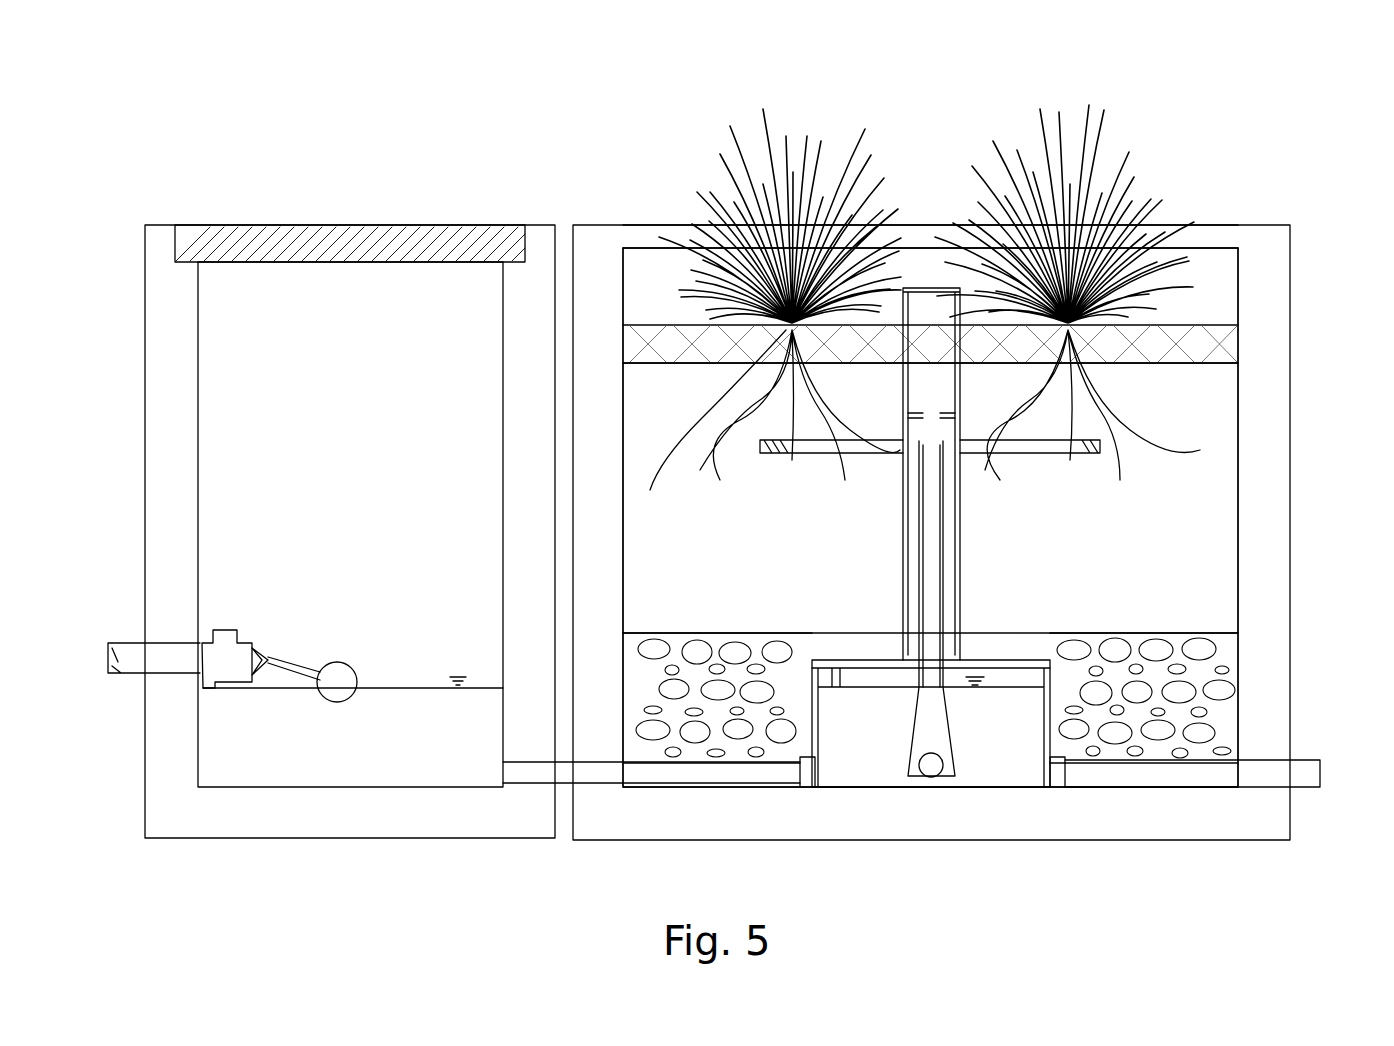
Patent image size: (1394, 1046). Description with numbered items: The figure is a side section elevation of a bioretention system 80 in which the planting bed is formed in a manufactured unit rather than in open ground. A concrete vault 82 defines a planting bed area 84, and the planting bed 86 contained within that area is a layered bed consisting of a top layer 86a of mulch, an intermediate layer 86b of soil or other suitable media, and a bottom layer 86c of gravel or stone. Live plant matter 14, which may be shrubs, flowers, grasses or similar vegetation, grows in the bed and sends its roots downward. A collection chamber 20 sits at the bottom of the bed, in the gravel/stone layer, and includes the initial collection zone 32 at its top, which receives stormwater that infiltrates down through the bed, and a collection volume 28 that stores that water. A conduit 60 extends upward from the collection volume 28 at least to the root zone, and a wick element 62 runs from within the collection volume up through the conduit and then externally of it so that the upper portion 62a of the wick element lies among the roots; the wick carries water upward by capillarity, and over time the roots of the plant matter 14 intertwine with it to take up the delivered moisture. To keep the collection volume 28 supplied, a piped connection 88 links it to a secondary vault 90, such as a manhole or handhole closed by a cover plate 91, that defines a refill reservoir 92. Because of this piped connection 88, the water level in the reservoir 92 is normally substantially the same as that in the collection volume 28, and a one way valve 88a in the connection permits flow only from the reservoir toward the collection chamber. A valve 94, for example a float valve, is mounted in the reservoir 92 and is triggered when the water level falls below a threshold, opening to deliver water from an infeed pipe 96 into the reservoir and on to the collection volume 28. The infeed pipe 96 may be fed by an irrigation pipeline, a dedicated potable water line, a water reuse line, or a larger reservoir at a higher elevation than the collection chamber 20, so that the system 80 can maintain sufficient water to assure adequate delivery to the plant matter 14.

The live plant matter 14 is at (862, 166).
The collection chamber 20 is at (1065, 705).
The collection volume 28 is at (931, 723).
The initial collection zone 32 is at (1015, 655).
The conduit 60 is at (897, 546).
The wick element 62 is at (950, 715).
The upper portion of the wick element 62a is at (1043, 452).
The bioretention system 80 is at (960, 441).
The concrete vault 82 is at (1275, 270).
The planting bed area 84 is at (1213, 240).
The planting bed 86 is at (618, 325).
The top layer 86a is at (1222, 343).
The intermediate layer 86b is at (1218, 430).
The bottom layer 86c is at (1215, 602).
The piped connection 88 is at (567, 775).
The one way valve 88a is at (815, 782).
The secondary vault 90 is at (157, 222).
The cover plate 91 is at (308, 225).
The refill reservoir 92 is at (353, 548).
The valve 94 is at (262, 638).
The infeed pipe 96 is at (113, 648).